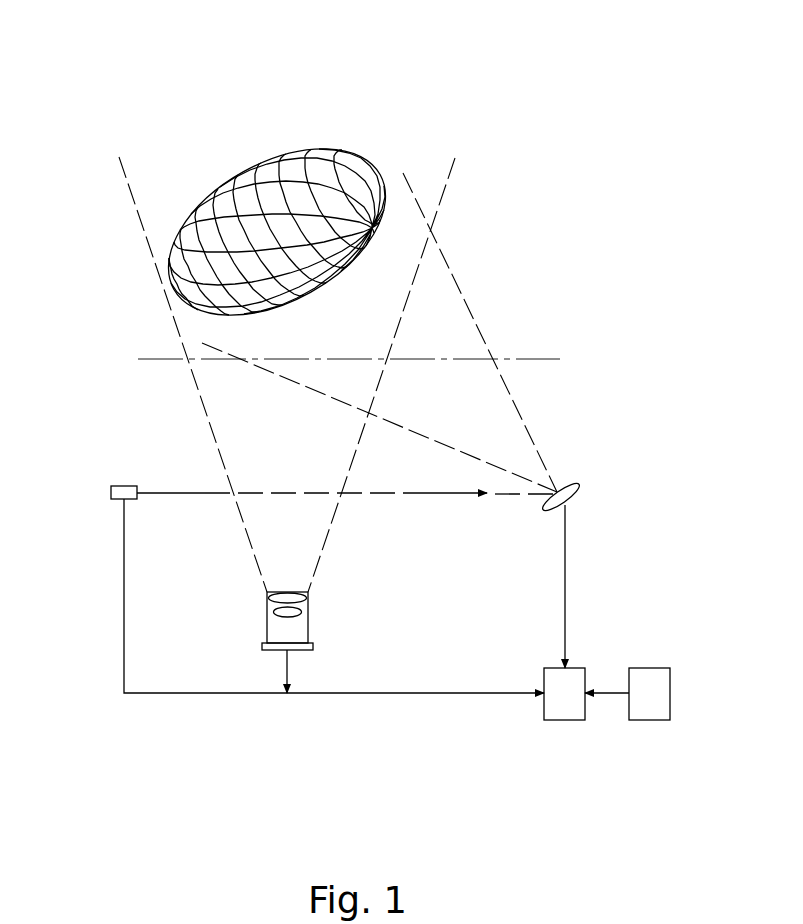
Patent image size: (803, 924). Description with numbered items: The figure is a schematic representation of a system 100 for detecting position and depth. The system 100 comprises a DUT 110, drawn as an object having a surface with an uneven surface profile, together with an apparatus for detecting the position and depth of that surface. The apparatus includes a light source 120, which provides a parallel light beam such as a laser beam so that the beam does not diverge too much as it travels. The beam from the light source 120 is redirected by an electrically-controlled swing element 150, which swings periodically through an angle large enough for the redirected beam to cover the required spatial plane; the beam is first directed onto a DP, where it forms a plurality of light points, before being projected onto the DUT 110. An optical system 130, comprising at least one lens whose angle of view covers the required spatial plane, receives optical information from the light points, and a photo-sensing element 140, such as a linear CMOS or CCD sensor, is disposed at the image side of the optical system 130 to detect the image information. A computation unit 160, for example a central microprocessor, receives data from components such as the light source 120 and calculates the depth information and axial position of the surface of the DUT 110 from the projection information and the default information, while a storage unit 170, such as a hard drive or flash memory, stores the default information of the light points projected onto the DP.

The system for detecting position and depth 100 is at (610, 55).
The DUT 110 is at (330, 152).
The light source 120 is at (127, 492).
The optical system 130 is at (277, 620).
The photo-sensing element 140 is at (300, 647).
The electrically-controlled swing element 150 is at (575, 488).
The computation unit 160 is at (563, 713).
The storage unit 170 is at (650, 713).
The element DP is at (535, 358).